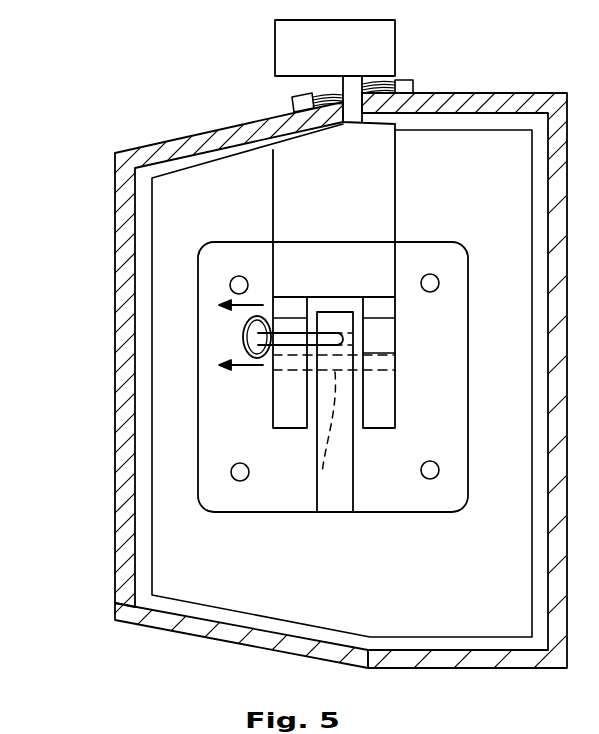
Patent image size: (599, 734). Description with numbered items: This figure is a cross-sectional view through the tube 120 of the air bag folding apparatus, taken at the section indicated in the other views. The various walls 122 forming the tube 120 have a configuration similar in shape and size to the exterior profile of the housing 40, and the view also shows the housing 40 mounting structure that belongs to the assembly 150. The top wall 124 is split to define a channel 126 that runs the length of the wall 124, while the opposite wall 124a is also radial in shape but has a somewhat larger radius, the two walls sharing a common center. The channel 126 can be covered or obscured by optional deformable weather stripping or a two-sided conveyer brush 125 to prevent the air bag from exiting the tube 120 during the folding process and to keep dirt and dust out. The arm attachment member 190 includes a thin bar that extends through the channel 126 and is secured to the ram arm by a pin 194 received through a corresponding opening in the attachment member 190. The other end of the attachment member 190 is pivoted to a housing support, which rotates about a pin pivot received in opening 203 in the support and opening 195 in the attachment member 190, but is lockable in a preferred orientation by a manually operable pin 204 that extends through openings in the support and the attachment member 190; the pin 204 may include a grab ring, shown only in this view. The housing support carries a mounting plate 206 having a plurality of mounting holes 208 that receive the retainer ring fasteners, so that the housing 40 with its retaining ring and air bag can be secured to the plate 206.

The tube 120 is at (108, 148).
The walls 122 is at (118, 226).
The top wall 124 is at (428, 100).
The opposite wall 124a is at (168, 628).
The two-sided conveyer brush 125 is at (336, 90).
The channel 126 is at (356, 112).
The housing 40 is at (190, 612).
The assembly 150 is at (548, 732).
The arm attachment member 190 is at (295, 47).
The pin 194 is at (384, 367).
The opening 195 is at (300, 377).
The opening 203 is at (320, 483).
The manually operable pin 204 is at (337, 322).
The mounting plate 206 is at (455, 384).
The mounting holes 208 is at (239, 276).